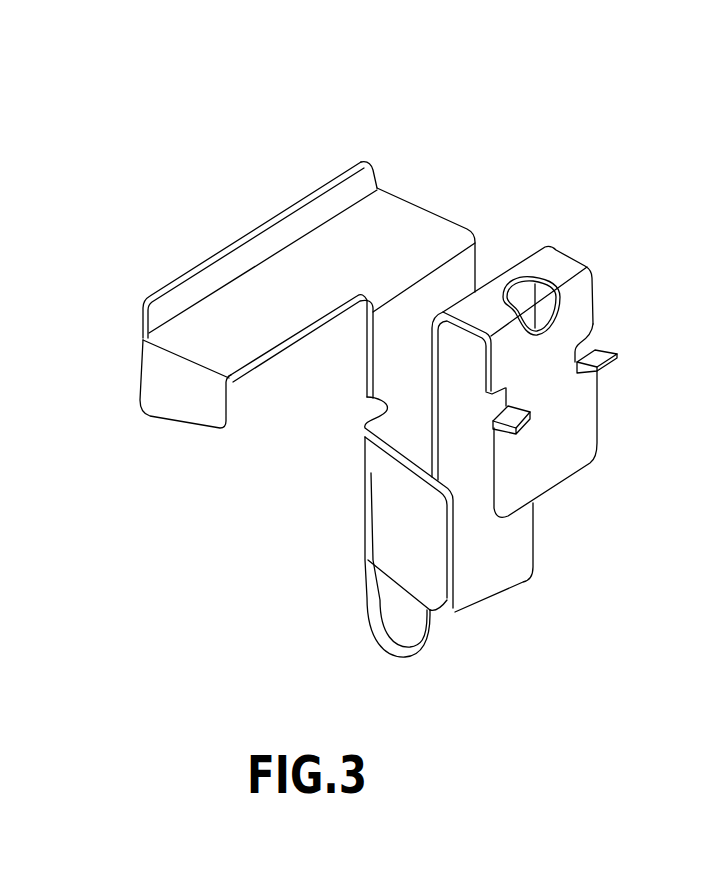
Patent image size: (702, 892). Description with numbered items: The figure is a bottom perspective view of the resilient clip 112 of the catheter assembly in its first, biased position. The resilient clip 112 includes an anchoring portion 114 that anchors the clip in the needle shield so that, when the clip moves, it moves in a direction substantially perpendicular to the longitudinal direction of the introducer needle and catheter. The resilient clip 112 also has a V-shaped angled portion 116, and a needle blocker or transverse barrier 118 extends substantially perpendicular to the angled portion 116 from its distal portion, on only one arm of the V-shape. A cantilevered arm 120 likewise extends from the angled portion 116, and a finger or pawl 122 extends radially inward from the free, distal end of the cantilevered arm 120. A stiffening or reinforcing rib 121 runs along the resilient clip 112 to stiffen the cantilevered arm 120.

The resilient clip 112 is at (470, 194).
The anchoring portion 114 is at (598, 404).
The angled portion 116 is at (373, 363).
The needle blocker 118 is at (455, 567).
The cantilevered arm 120 is at (258, 365).
The stiffening rib 121 is at (297, 209).
The pawl 122 is at (173, 418).